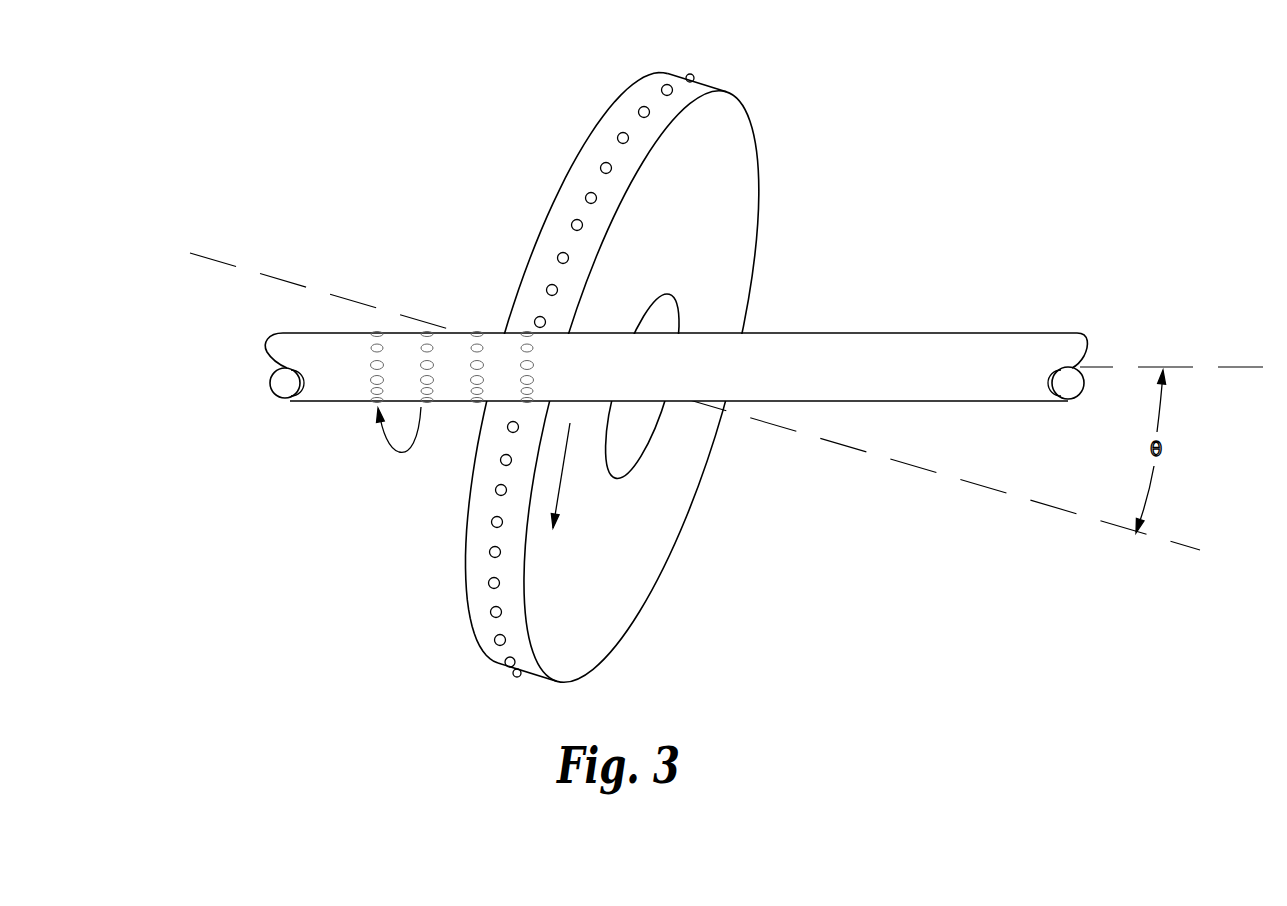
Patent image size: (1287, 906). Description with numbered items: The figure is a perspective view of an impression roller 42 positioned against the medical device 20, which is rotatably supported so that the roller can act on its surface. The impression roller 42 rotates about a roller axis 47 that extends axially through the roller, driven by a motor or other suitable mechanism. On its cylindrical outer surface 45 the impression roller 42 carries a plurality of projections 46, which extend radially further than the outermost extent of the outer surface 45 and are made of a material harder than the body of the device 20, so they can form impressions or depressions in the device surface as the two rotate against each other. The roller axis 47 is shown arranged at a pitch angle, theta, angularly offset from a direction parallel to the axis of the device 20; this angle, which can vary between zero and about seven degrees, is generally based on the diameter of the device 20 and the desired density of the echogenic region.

The medical device 20 is at (335, 372).
The impression roller 42 is at (639, 373).
The outer surface 45 is at (601, 150).
The projections 46 is at (618, 136).
The roller axis 47 is at (287, 283).